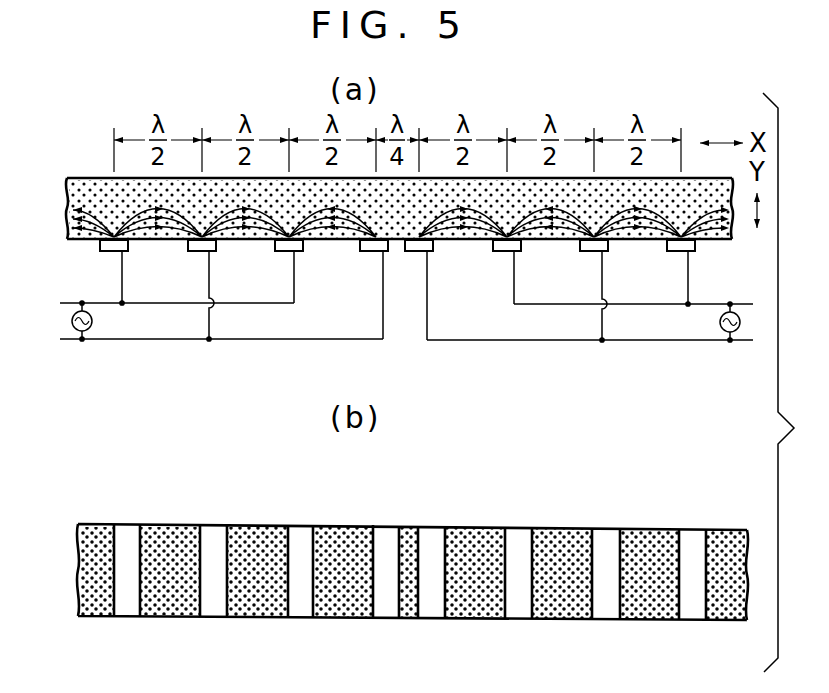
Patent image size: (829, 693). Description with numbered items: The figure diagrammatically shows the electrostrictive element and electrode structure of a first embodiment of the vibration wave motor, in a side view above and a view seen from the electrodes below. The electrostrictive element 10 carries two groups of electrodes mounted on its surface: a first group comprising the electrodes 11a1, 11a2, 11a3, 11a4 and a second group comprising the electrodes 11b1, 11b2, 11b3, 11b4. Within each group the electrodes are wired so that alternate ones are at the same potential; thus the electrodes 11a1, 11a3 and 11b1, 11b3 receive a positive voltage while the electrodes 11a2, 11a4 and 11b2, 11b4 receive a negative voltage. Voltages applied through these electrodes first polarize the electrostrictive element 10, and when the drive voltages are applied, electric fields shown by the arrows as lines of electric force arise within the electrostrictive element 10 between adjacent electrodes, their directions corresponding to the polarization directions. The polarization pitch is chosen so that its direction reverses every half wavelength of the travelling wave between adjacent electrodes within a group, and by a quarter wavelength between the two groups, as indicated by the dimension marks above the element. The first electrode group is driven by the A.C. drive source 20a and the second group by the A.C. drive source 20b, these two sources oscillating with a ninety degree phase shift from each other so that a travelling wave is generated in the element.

The electrostrictive element 10 is at (91, 171).
The electrode 11a1 is at (369, 253).
The electrode 11a2 is at (279, 253).
The electrode 11a3 is at (186, 253).
The electrode 11a4 is at (105, 253).
The electrode 11b1 is at (433, 253).
The electrode 11b2 is at (520, 253).
The electrode 11b3 is at (607, 253).
The electrode 11b4 is at (692, 253).
The A.C. drive source 20a is at (98, 321).
The A.C. drive source 20b is at (717, 322).